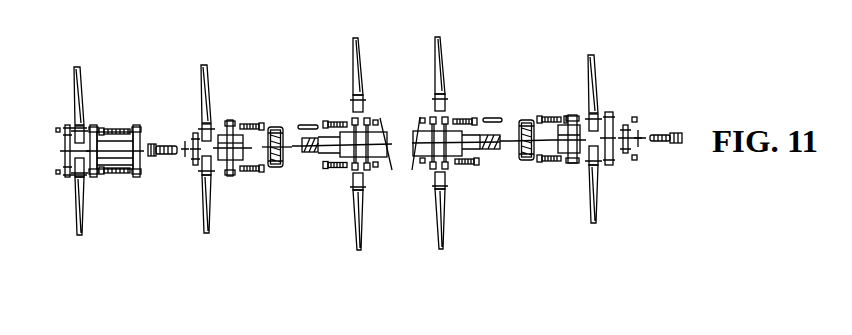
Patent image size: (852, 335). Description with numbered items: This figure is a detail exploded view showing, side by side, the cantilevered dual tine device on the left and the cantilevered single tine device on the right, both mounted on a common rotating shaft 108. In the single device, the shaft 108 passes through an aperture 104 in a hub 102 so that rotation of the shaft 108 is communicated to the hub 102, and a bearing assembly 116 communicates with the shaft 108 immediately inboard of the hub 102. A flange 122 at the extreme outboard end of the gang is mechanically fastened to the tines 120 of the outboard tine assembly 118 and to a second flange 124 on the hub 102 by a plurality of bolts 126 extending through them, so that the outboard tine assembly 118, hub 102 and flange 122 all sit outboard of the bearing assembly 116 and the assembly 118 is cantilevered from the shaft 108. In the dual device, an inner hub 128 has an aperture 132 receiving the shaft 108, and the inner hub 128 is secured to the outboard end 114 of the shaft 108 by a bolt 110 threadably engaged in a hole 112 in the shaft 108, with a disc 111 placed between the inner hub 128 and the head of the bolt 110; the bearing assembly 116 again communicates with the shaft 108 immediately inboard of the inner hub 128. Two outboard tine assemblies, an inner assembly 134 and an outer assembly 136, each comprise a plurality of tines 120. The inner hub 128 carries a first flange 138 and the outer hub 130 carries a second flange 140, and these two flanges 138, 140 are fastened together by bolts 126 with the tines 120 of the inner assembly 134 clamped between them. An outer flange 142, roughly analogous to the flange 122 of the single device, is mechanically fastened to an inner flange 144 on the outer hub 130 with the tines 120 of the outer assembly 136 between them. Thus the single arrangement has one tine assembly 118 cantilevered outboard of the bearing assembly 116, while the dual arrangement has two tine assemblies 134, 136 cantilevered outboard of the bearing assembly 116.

The hub 102 is at (580, 165).
The aperture 104 is at (547, 128).
The shaft 108 is at (312, 138).
The bolt 110 is at (164, 141).
The disc 111 is at (198, 133).
The hole 112 is at (297, 151).
The outboard end 114 is at (297, 143).
The bearing assembly 116 is at (278, 125).
The outboard tine assembly 118 is at (611, 205).
The tines 120 is at (443, 243).
The flange 122 is at (613, 108).
The second flange 124 is at (573, 116).
The bolts 126 is at (115, 178).
The inner hub 128 is at (213, 142).
The outer hub 130 is at (118, 144).
The aperture 132 is at (211, 150).
The inner assembly 134 is at (214, 233).
The outer assembly 136 is at (71, 226).
The first flange 138 is at (228, 176).
The second flange 140 is at (136, 126).
The outer flange 142 is at (63, 128).
The inner flange 144 is at (92, 124).